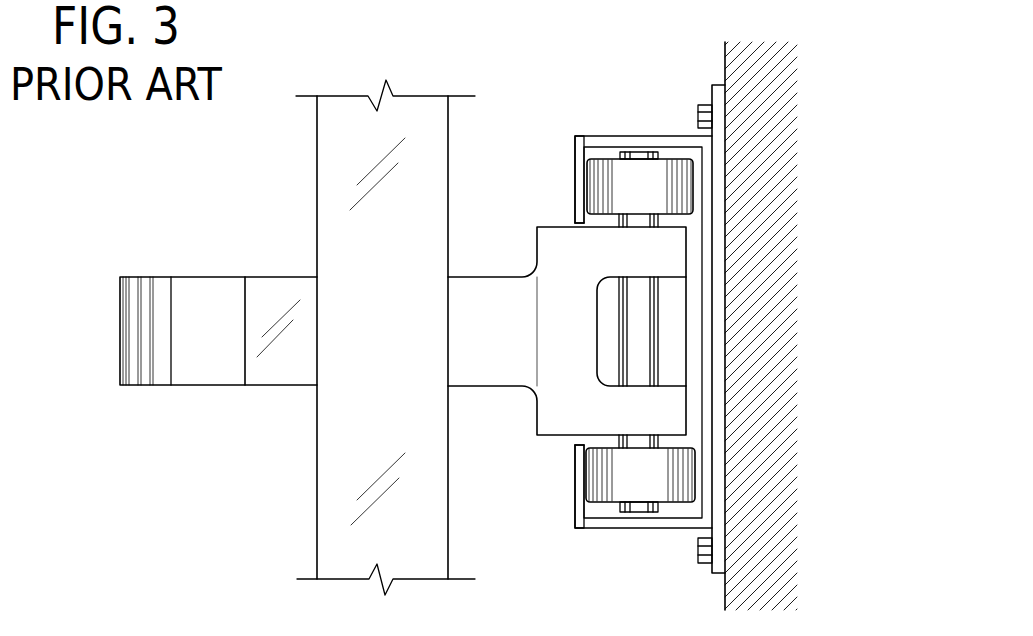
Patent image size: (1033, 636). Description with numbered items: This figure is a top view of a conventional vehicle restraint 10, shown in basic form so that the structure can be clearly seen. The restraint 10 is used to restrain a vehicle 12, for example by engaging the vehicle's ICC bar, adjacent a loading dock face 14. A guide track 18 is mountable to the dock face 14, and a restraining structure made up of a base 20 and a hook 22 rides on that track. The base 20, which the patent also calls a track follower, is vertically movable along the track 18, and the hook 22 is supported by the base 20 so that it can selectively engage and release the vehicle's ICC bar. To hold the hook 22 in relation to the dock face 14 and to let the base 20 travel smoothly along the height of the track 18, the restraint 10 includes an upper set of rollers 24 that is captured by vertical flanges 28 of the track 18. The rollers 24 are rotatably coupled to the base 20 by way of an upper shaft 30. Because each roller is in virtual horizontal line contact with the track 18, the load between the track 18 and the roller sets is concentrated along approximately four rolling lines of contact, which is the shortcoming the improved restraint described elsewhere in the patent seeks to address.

The vehicle restraint 10 is at (72, 284).
The vehicle 12 is at (317, 514).
The loading dock face 14 is at (725, 63).
The guide track 18 is at (594, 135).
The base 20 is at (541, 436).
The hook 22 is at (207, 386).
The upper set of rollers 24 is at (630, 181).
The vertical flanges 28 is at (576, 214).
The upper shaft 30 is at (618, 340).